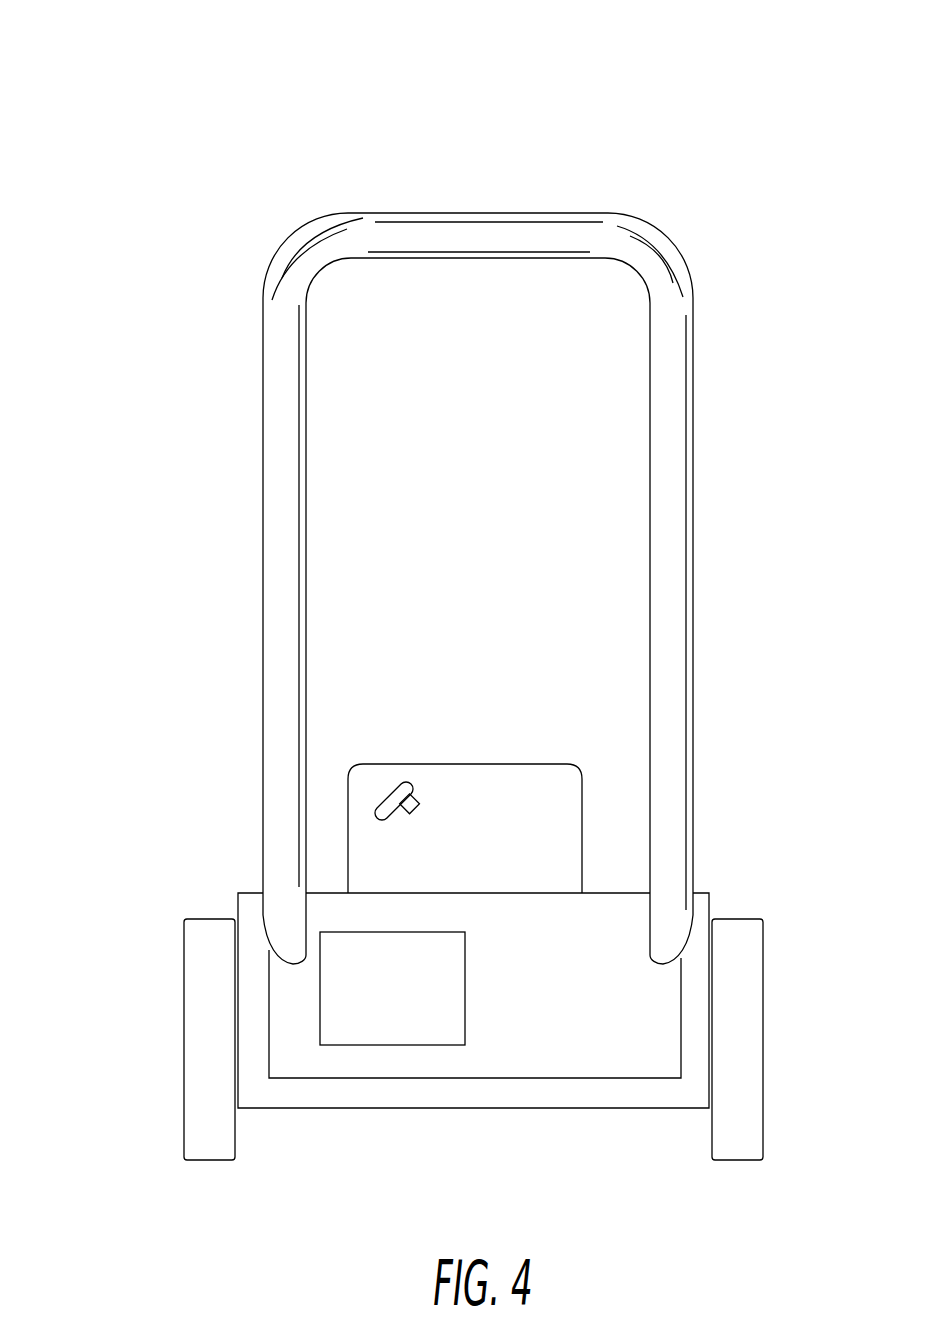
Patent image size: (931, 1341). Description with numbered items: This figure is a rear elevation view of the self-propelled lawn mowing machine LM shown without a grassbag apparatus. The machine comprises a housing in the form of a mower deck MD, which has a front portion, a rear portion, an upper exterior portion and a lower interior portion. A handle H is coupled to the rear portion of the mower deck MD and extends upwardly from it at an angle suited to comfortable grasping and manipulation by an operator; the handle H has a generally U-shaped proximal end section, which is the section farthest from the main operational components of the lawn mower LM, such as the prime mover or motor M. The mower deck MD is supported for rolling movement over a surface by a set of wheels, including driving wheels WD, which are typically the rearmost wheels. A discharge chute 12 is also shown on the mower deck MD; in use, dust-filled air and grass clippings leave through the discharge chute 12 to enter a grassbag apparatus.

The handle H is at (478, 194).
The discharge chute 12 is at (553, 600).
The self-propelled lawn mowing machine LM is at (449, 600).
The motor M is at (496, 802).
The mower deck MD is at (612, 913).
The driving wheels WD is at (205, 1048).